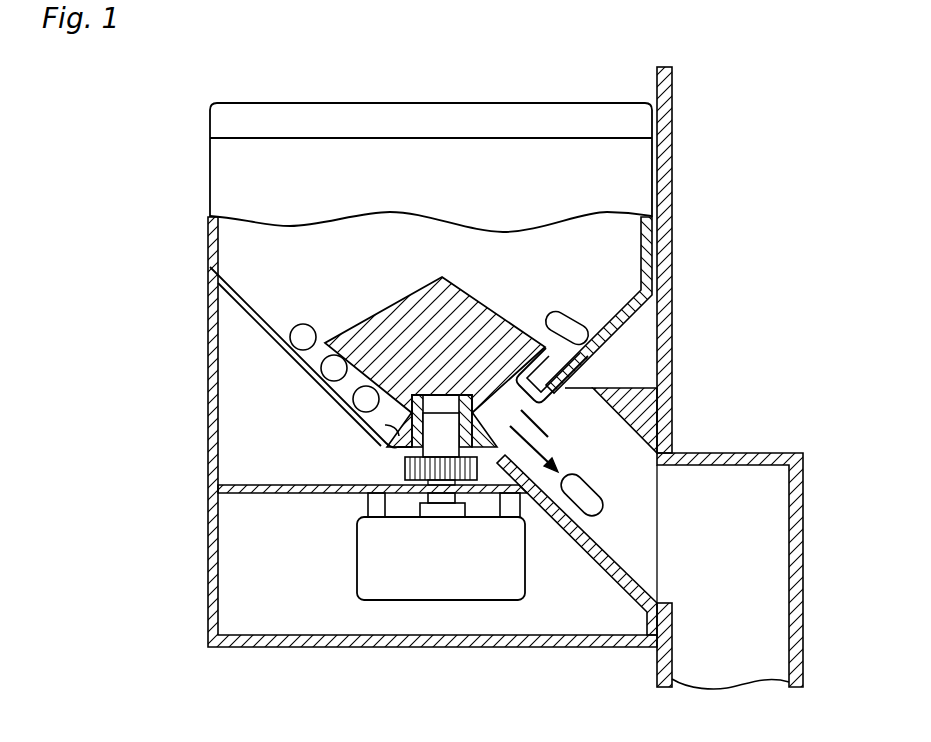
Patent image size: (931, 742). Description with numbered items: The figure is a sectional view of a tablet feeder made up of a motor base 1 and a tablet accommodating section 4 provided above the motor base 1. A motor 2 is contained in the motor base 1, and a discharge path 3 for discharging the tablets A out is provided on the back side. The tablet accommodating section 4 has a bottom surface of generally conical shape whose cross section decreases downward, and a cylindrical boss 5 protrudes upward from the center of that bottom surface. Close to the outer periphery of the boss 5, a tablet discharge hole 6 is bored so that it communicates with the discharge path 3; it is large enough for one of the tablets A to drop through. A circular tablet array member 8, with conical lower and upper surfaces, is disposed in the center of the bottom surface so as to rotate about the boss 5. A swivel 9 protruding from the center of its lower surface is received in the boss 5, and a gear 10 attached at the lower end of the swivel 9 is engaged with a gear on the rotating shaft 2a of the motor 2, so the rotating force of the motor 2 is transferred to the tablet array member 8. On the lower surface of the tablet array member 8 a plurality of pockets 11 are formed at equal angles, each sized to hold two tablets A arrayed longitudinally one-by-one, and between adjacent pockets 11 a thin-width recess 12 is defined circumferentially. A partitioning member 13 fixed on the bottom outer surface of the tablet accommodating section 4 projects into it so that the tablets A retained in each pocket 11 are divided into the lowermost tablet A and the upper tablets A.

The motor base 1 is at (196, 567).
The motor 2 is at (412, 585).
The rotating shaft 2a is at (425, 519).
The discharge path 3 is at (718, 493).
The tablet accommodating section 4 is at (518, 118).
The cylindrical boss 5 is at (352, 425).
The tablet discharge hole 6 is at (533, 424).
The tablet array member 8 is at (485, 307).
The swivel 9 is at (403, 459).
The gear 10 is at (390, 487).
The pockets 11 is at (317, 338).
The thin-width recess 12 is at (352, 397).
The partitioning member 13 is at (585, 364).
The tablets A is at (600, 512).